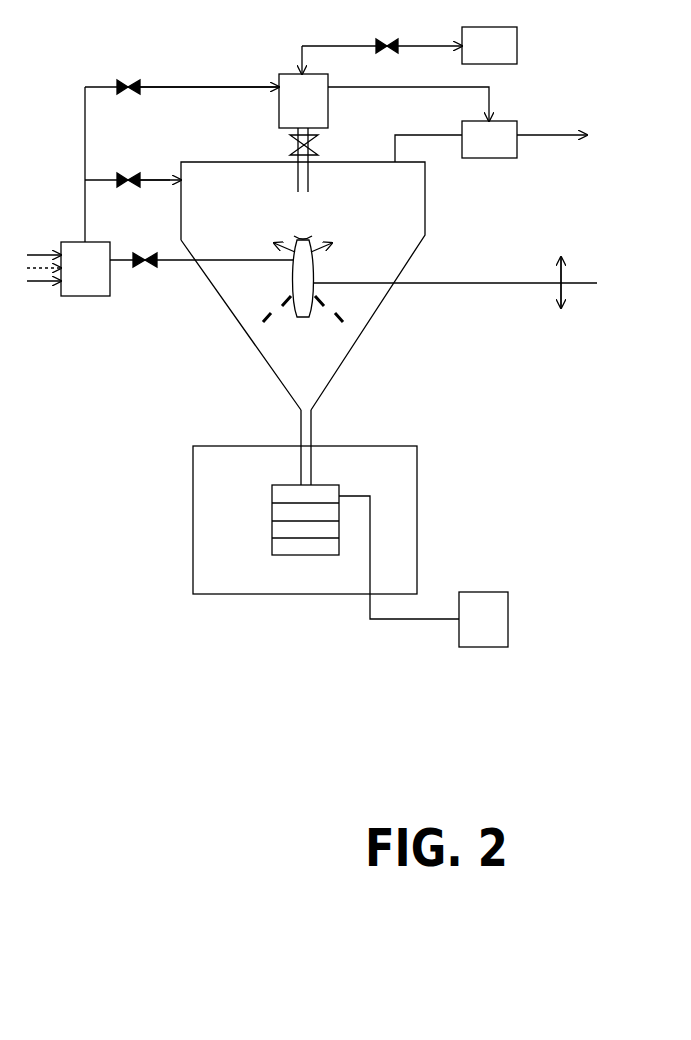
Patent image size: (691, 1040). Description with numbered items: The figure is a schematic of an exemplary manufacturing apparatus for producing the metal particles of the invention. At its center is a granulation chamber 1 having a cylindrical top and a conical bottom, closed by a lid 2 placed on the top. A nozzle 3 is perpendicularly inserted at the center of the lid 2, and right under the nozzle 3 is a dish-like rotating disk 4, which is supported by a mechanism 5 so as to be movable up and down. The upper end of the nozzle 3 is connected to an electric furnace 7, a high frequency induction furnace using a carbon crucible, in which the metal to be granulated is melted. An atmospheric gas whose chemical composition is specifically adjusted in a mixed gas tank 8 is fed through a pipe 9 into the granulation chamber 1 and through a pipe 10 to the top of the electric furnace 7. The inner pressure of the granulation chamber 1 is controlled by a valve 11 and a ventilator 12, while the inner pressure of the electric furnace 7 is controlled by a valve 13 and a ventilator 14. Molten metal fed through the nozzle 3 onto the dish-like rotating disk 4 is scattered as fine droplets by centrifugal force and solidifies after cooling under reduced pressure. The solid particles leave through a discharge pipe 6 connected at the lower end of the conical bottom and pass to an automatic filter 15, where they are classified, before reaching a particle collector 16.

The granulation chamber 1 is at (426, 218).
The lid 2 is at (362, 160).
The nozzle 3 is at (309, 175).
The dish-like rotating disk 4 is at (317, 234).
The mechanism 5 is at (493, 284).
The discharge pipe 6 is at (312, 428).
The electric furnace 7 is at (320, 98).
The mixed gas tank 8 is at (97, 297).
The pipe 9 is at (153, 183).
The pipe 10 is at (180, 88).
The valve 11 is at (128, 172).
The ventilator 12 is at (517, 146).
The valve 13 is at (138, 82).
The ventilator 14 is at (508, 49).
The automatic filter 15 is at (307, 550).
The particle collector 16 is at (500, 632).